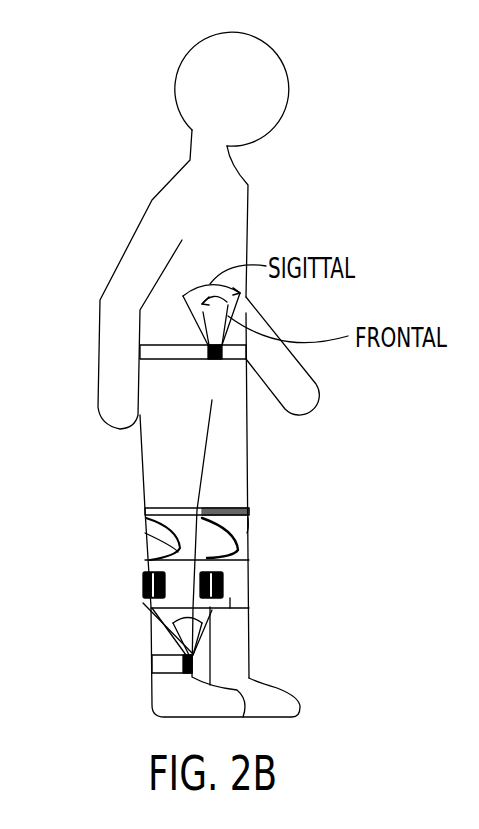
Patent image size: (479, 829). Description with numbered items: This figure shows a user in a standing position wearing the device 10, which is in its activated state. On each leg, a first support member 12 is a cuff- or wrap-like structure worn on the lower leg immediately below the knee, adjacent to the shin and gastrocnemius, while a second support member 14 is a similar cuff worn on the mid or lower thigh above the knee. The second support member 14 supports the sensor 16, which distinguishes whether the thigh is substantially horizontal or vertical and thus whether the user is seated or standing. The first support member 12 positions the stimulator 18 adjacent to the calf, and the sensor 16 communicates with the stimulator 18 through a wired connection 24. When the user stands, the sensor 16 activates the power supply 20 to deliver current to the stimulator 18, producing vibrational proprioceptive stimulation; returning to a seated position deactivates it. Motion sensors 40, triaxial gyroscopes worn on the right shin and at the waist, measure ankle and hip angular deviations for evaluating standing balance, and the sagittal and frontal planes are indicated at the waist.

The device 10 is at (342, 504).
The first support member 12 is at (152, 632).
The second support member 14 is at (158, 509).
The sensor 16 is at (193, 507).
The stimulator 18 is at (147, 594).
The power supply 20 is at (143, 566).
The wired connection 24 is at (163, 543).
The motion sensors 40 is at (167, 353).